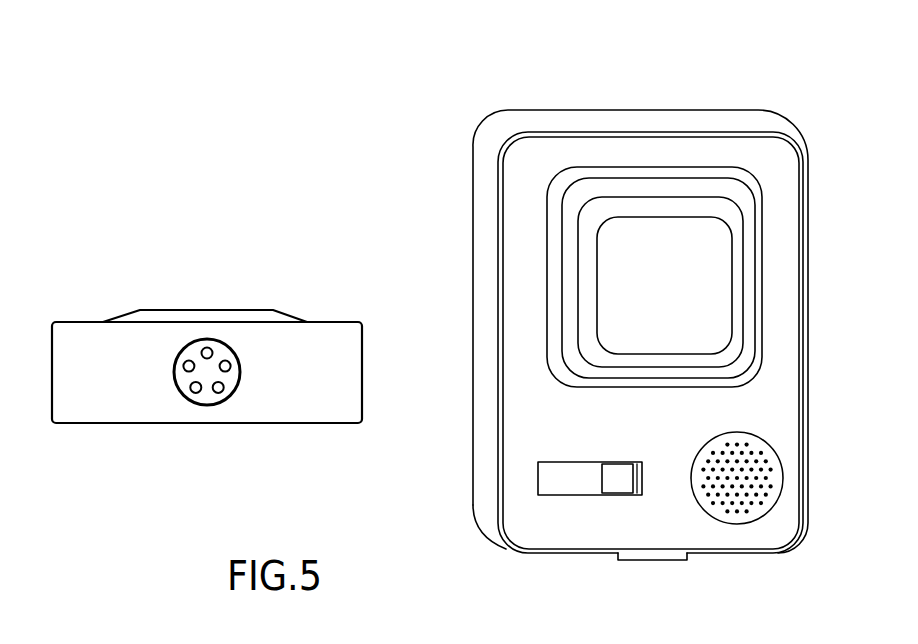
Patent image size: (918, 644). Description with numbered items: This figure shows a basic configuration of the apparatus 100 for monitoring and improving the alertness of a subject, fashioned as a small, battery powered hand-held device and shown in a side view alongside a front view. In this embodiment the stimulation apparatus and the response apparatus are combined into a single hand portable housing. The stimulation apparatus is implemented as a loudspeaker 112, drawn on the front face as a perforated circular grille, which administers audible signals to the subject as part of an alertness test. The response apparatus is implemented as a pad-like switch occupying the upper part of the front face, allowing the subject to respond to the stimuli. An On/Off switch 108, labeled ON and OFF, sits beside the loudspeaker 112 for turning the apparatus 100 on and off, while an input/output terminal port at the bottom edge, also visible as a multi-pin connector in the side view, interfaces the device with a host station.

The apparatus for monitoring and improving the alertness of a subject 100 is at (649, 313).
The On/Off switch 108 is at (592, 483).
The loudspeaker 112 is at (738, 523).